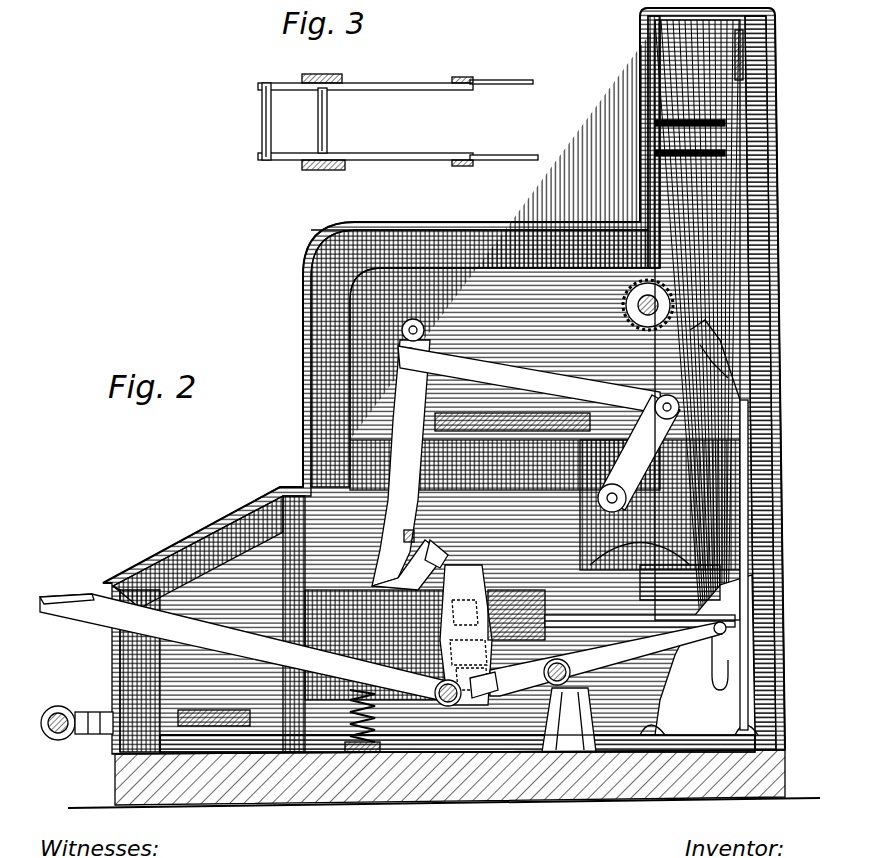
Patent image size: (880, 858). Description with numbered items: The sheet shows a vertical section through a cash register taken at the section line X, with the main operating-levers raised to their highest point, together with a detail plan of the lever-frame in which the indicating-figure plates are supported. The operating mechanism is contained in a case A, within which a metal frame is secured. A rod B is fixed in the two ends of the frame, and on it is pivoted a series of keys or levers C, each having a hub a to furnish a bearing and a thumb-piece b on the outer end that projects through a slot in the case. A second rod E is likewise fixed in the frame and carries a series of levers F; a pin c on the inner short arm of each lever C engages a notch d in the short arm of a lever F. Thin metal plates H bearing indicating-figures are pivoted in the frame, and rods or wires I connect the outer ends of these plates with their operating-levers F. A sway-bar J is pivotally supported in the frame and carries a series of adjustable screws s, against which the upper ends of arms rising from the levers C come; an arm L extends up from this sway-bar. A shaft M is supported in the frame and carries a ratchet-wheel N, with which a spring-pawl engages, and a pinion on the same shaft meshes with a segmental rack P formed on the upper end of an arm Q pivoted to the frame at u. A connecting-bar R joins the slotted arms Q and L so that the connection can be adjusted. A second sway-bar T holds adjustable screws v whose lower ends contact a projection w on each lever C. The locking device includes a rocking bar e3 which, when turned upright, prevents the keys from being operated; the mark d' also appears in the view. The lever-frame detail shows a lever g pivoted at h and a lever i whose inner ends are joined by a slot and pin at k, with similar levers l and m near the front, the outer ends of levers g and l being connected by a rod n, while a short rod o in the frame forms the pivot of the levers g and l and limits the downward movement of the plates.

In FIG. 2, the case A is at (444, 379).
In FIG. 2, the rod B is at (412, 752).
In FIG. 2, the keys or levers C is at (247, 648).
In FIG. 2, the rod E is at (545, 800).
In FIG. 2, the levers F is at (606, 659).
In FIG. 2, the thin metal plates H is at (700, 238).
In FIG. 2, the rods or wires I is at (730, 565).
In FIG. 2, the sway-bar J is at (408, 537).
In FIG. 2, the arm L is at (401, 452).
In FIG. 2, the shaft M is at (660, 318).
In FIG. 2, the ratchet-wheel N is at (660, 300).
In FIG. 2, the segmental rack P is at (715, 360).
In FIG. 2, the arm Q is at (639, 453).
In FIG. 2, the connecting-bar R is at (530, 380).
In FIG. 2, the section line X is at (350, 273).
In FIG. 2, the hub a is at (568, 661).
In FIG. 2, the thumb-piece b is at (67, 587).
In FIG. 2, the pin c is at (484, 687).
In FIG. 2, the notch d is at (543, 676).
In FIG. 2, the support d' is at (655, 572).
In FIG. 2, the rocking bar e3 is at (234, 700).
In FIG. 3, the lever g is at (365, 72).
In FIG. 2, the lever g is at (512, 411).
In FIG. 3, the pivot h is at (323, 122).
In FIG. 3, the lever i is at (501, 68).
In FIG. 2, the lever i is at (717, 150).
In FIG. 3, the slot and pin connection k is at (462, 121).
In FIG. 2, the slot and pin connection k is at (466, 635).
In FIG. 3, the lever l is at (365, 143).
In FIG. 3, the lever m is at (504, 169).
In FIG. 2, the lever m is at (652, 130).
In FIG. 3, the rod n is at (262, 120).
In FIG. 3, the short rod o is at (330, 120).
In FIG. 2, the adjustable screws s is at (445, 553).
In FIG. 2, the pivot u is at (611, 577).
In FIG. 2, the adjustable screws v is at (462, 612).
In FIG. 2, the second sway-bar T is at (468, 652).
In FIG. 2, the projection w is at (472, 677).